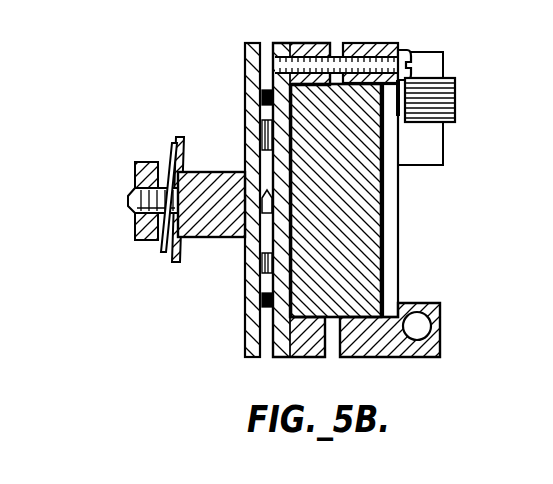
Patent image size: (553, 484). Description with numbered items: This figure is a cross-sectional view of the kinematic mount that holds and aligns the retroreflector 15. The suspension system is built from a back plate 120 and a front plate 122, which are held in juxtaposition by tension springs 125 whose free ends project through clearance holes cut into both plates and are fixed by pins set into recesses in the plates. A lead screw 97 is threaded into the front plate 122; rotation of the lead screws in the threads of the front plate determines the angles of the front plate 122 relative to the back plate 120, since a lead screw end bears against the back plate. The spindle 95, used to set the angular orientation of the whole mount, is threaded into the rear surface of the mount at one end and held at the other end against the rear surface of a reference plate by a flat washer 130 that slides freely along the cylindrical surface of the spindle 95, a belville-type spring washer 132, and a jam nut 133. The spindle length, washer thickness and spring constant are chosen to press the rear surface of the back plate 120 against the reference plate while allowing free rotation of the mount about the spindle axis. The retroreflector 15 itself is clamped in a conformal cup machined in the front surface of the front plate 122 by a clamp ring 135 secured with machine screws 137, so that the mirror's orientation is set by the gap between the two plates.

The retroreflector 15 is at (357, 214).
The spindle 95 is at (228, 172).
The lead screw 97 is at (458, 95).
The back plate 120 is at (246, 58).
The front plate 122 is at (302, 357).
The tension springs 125 is at (262, 128).
The flat washer 130 is at (178, 138).
The belville-type spring washer 132 is at (170, 170).
The jam nut 133 is at (135, 176).
The clamp ring 135 is at (373, 358).
The machine screws 137 is at (403, 50).